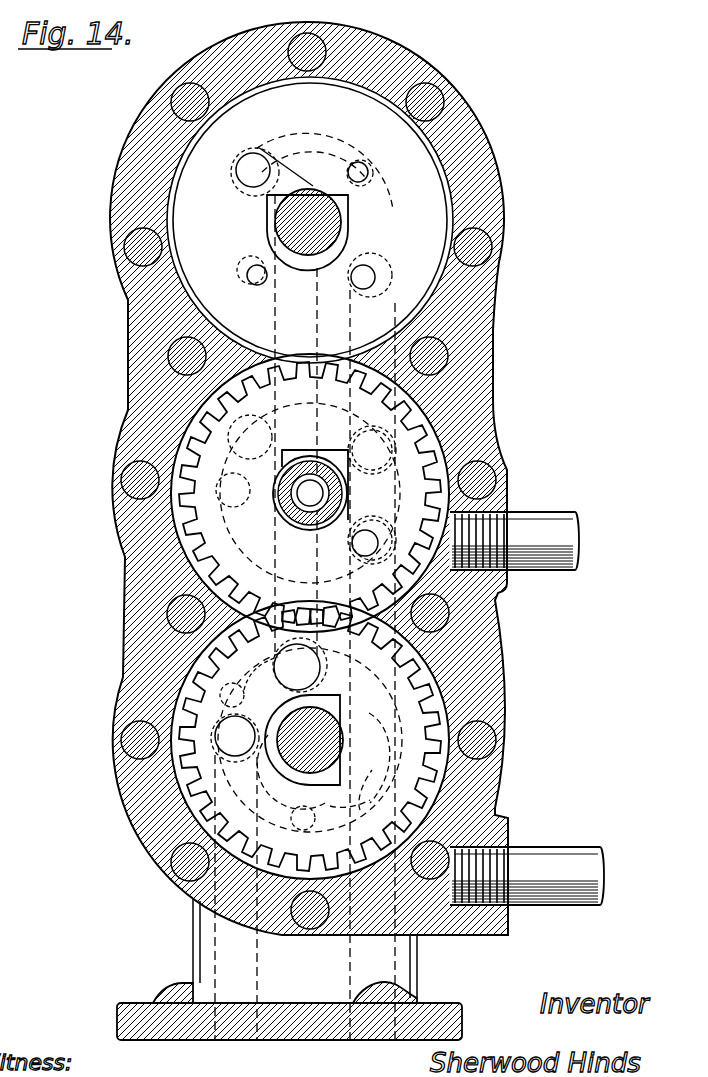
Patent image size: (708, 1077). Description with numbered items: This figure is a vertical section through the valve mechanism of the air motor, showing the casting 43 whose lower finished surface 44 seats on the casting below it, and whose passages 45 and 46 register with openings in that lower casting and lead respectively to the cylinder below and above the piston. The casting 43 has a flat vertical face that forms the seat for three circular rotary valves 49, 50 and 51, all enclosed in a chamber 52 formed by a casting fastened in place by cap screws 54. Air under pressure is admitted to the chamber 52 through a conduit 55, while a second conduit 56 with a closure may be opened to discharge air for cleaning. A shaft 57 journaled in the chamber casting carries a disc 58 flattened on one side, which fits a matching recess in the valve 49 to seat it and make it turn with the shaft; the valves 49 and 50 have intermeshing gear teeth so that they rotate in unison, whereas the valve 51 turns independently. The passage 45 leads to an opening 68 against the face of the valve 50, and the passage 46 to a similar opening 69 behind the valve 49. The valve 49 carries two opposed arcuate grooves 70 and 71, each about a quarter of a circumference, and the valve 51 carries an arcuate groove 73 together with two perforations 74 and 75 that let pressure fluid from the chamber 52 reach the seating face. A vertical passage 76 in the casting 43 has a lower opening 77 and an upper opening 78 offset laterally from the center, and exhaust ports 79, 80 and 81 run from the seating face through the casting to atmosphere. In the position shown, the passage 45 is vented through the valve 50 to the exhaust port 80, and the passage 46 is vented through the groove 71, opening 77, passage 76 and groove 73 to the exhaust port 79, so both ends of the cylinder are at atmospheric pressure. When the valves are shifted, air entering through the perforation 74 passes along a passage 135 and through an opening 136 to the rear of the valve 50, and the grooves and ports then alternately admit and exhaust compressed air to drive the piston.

The casting 43 is at (308, 979).
The lower finished surface 44 is at (150, 1042).
The passage 45 is at (410, 962).
The passage 46 is at (213, 962).
The rotary valve 49 is at (437, 707).
The rotary valve 50 is at (400, 427).
The rotary valve 51 is at (412, 190).
The chamber 52 is at (438, 455).
The cap screws 54 is at (425, 83).
The conduit 55 is at (543, 522).
The conduit 56 is at (548, 866).
The shaft 57 is at (330, 740).
The disc 58 is at (286, 773).
The opening 68 is at (388, 522).
The opening 69 is at (232, 766).
The arcuate groove 70 is at (371, 815).
The arcuate groove 71 is at (249, 682).
The arcuate groove 73 is at (350, 160).
The perforation 74 is at (355, 283).
The perforation 75 is at (248, 285).
The vertically extending passage 76 is at (284, 318).
The opening 77 is at (312, 659).
The opening 78 is at (244, 182).
The exhaust port 79 is at (391, 211).
The exhaust port 80 is at (306, 461).
The exhaust port 81 is at (295, 820).
The passage 135 is at (400, 330).
The opening 136 is at (350, 490).